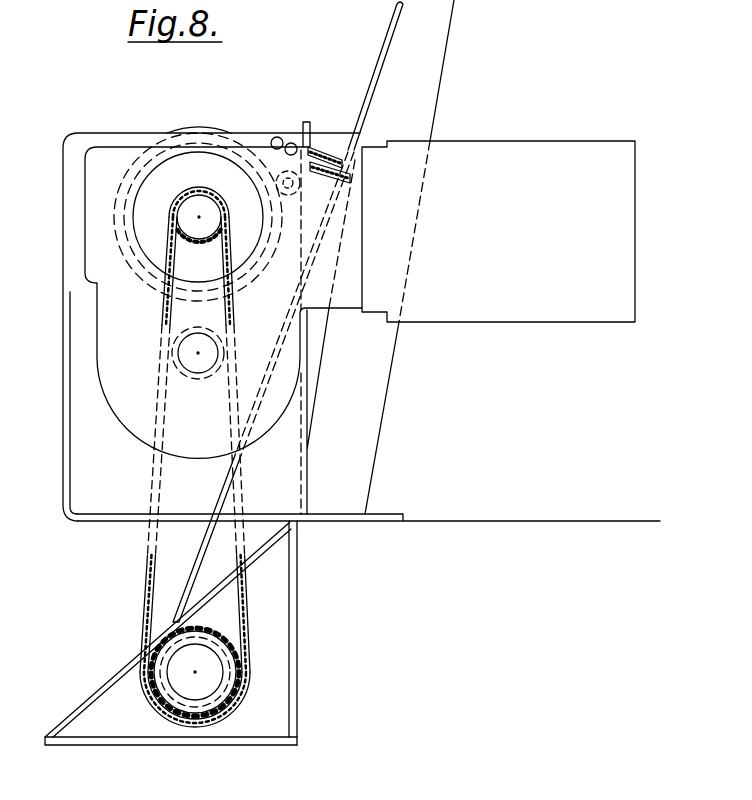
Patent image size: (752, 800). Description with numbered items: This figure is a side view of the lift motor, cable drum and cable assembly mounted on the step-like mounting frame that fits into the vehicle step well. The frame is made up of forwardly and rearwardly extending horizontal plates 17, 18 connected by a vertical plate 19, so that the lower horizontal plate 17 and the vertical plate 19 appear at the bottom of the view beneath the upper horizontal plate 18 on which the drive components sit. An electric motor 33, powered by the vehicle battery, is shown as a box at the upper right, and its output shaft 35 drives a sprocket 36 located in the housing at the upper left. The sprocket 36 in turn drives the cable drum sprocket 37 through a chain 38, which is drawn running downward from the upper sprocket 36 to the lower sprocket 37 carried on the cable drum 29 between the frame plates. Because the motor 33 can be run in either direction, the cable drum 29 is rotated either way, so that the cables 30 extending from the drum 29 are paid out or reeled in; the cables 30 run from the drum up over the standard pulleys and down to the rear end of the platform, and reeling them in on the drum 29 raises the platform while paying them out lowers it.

The horizontal plate 17 is at (99, 740).
The horizontal plate 18 is at (430, 520).
The vertical plate 19 is at (298, 598).
The cable drum 29 is at (183, 663).
The cables 30 is at (201, 549).
The electric motor 33 is at (550, 157).
The output shaft 35 is at (185, 353).
The sprocket 36 is at (123, 206).
The cable drum sprocket 37 is at (165, 624).
The chain 38 is at (146, 585).